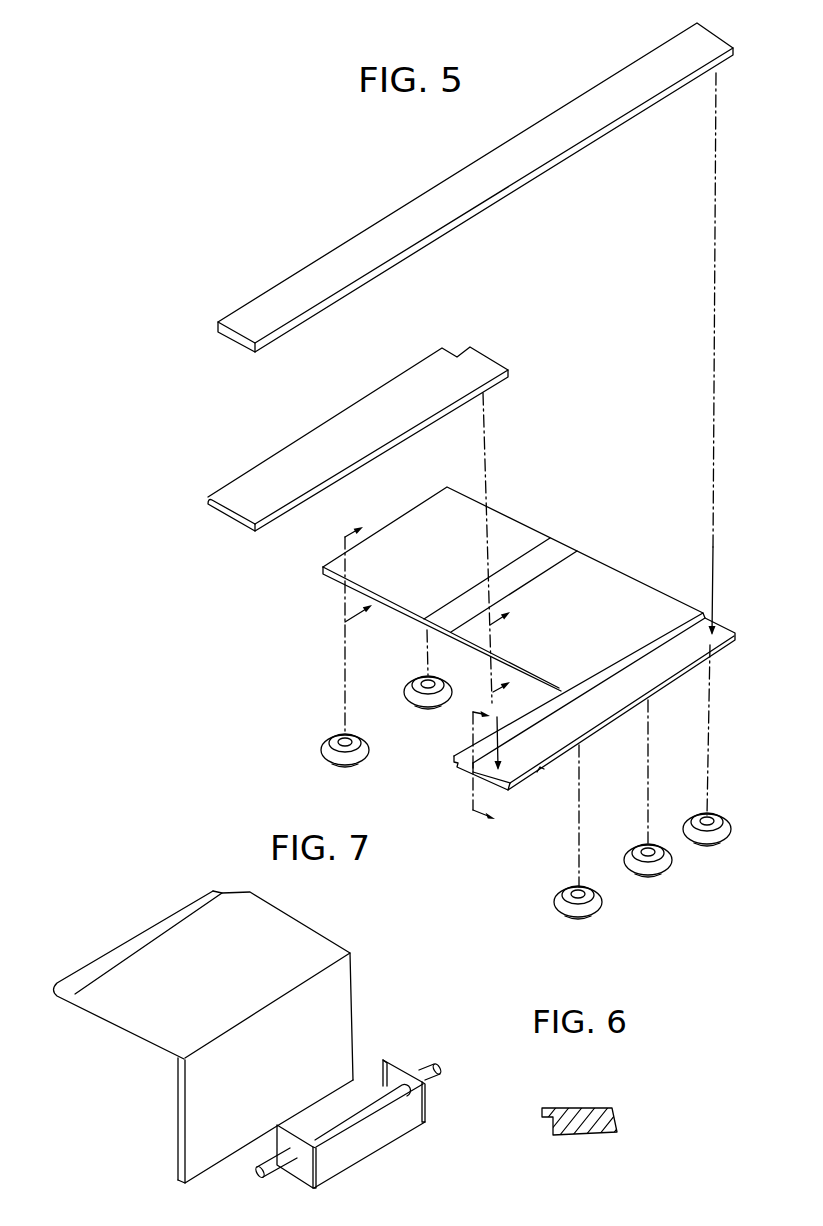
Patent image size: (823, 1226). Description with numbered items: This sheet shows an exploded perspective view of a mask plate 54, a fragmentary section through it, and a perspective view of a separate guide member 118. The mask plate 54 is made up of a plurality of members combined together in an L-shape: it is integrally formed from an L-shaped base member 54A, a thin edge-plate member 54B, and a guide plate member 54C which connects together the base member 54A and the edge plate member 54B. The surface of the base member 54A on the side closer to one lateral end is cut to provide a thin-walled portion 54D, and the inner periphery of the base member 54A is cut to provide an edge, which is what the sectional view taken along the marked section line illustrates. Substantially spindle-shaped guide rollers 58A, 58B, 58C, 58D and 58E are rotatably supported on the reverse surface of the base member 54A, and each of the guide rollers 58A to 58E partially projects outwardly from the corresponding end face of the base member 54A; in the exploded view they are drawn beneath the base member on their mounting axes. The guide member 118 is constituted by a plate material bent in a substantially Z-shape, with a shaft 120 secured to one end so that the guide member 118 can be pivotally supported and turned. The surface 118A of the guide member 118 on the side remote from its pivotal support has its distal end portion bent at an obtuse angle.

In FIG. 5, the mask plate 54 is at (206, 720).
In FIG. 5, the L-shaped base member 54A is at (609, 581).
In FIG. 6, the L-shaped base member 54A is at (620, 1106).
In FIG. 5, the thin edge-plate member 54B is at (248, 483).
In FIG. 5, the guide plate member 54C is at (403, 217).
In FIG. 5, the thin-walled portion 54D is at (502, 523).
In FIG. 5, the guide roller 58A is at (562, 903).
In FIG. 5, the guide roller 58B is at (662, 845).
In FIG. 5, the guide roller 58C is at (728, 822).
In FIG. 5, the guide roller 58D is at (345, 762).
In FIG. 5, the guide roller 58E is at (410, 702).
In FIG. 7, the guide member 118 is at (371, 948).
In FIG. 7, the surface of the guide member 118A is at (158, 967).
In FIG. 7, the shaft 120 is at (427, 1066).